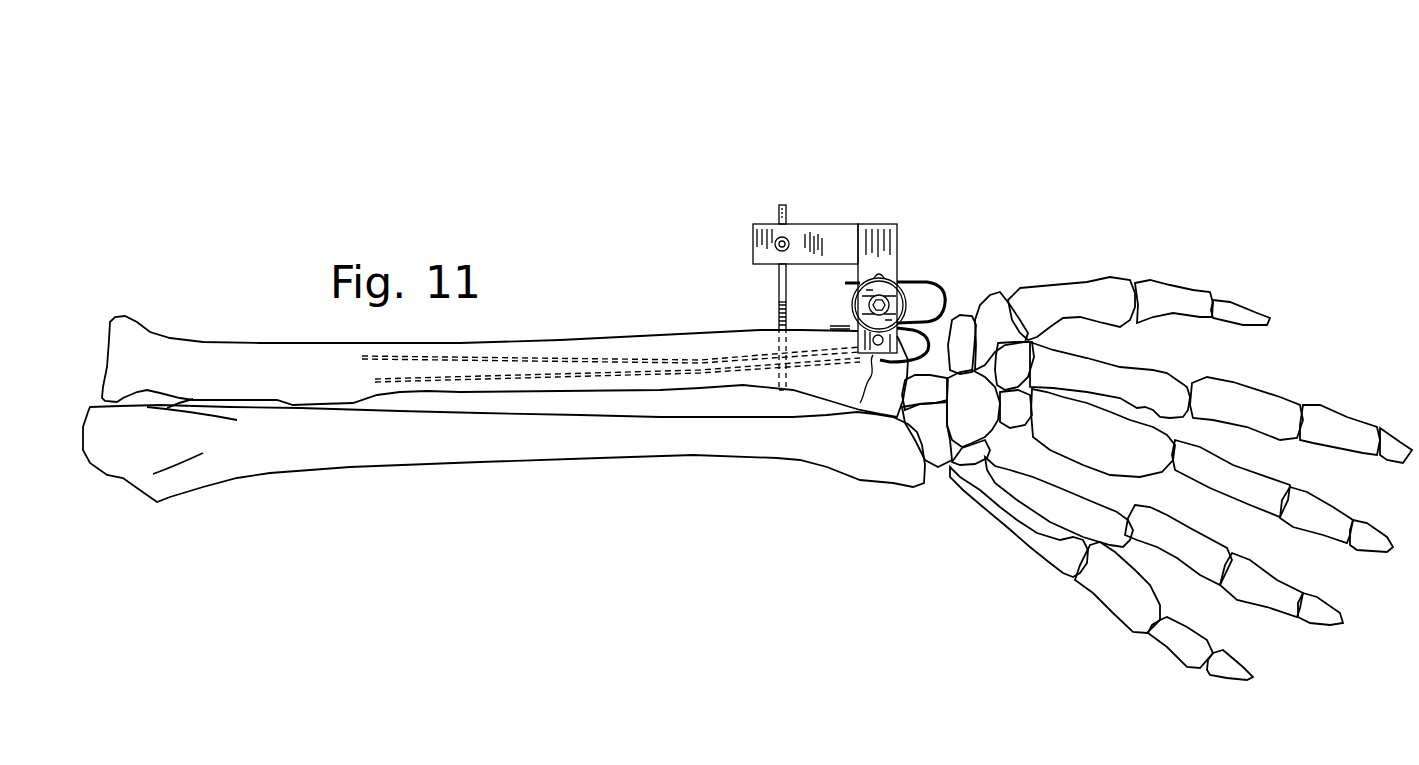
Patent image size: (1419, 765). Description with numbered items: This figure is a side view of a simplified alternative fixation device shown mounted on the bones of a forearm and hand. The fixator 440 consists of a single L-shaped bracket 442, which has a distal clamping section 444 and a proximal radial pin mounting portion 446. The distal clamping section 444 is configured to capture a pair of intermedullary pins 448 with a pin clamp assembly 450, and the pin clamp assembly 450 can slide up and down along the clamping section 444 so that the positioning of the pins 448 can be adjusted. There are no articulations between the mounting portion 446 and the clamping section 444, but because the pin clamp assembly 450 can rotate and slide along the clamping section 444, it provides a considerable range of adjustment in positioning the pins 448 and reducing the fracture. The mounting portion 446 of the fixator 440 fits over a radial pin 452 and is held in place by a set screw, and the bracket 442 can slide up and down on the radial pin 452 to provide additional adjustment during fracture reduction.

The fixator 440 is at (898, 141).
The L-shaped bracket 442 is at (815, 224).
The distal clamping section 444 is at (897, 258).
The proximal radial pin mounting portion 446 is at (768, 224).
The intermedullary pins 448 is at (937, 327).
The pin clamp assembly 450 is at (850, 313).
The radial pin 452 is at (777, 278).